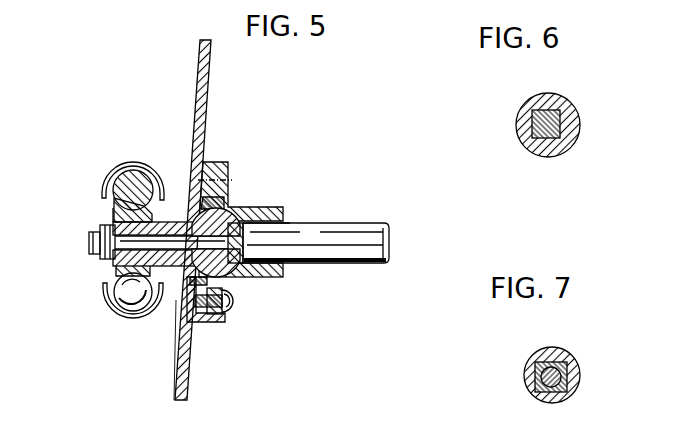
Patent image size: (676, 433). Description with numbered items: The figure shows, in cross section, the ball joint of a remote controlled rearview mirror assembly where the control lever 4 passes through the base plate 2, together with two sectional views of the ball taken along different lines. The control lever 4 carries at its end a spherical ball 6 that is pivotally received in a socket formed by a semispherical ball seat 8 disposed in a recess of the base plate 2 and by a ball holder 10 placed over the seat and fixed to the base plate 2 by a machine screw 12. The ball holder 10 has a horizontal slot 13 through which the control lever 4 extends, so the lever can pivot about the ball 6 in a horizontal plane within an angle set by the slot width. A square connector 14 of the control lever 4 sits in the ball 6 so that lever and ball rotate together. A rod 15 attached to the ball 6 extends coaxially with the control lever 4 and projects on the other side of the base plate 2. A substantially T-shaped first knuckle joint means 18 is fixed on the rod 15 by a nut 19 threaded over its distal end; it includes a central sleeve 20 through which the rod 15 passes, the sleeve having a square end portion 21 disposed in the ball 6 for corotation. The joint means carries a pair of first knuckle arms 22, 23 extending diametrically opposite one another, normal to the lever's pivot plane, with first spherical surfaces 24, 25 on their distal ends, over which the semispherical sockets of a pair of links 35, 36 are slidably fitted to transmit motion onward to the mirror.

In FIG. 5, the base plate 2 is at (201, 62).
In FIG. 5, the control lever 4 is at (342, 228).
In FIG. 5, the spherical ball 6 is at (231, 183).
In FIG. 6, the spherical ball 6 is at (518, 115).
In FIG. 7, the spherical ball 6 is at (552, 353).
In FIG. 5, the semispherical ball seat 8 is at (207, 323).
In FIG. 5, the ball holder 10 is at (270, 279).
In FIG. 5, the machine screw 12 is at (241, 303).
In FIG. 5, the horizontal slot 13 is at (290, 225).
In FIG. 5, the square connector 14 is at (246, 207).
In FIG. 6, the square connector 14 is at (557, 110).
In FIG. 5, the rod 15 is at (186, 200).
In FIG. 7, the rod 15 is at (538, 379).
In FIG. 5, the first knuckle joint means 18 is at (110, 203).
In FIG. 5, the nut 19 is at (100, 246).
In FIG. 5, the central sleeve 20 is at (165, 282).
In FIG. 5, the square end portion 21 is at (212, 162).
In FIG. 7, the square end portion 21 is at (567, 382).
In FIG. 5, the first knuckle arm 22 is at (114, 210).
In FIG. 5, the first knuckle arm 23 is at (110, 270).
In FIG. 5, the first spherical surface 24 is at (128, 164).
In FIG. 5, the first spherical surface 25 is at (113, 303).
In FIG. 5, the link 35 is at (118, 158).
In FIG. 5, the link 36 is at (120, 318).